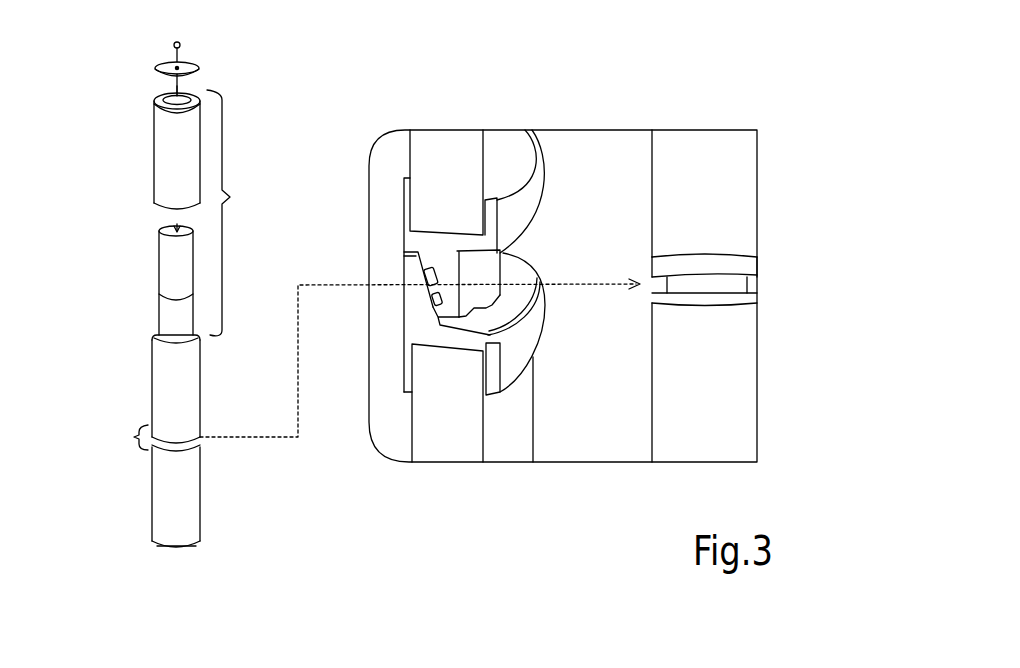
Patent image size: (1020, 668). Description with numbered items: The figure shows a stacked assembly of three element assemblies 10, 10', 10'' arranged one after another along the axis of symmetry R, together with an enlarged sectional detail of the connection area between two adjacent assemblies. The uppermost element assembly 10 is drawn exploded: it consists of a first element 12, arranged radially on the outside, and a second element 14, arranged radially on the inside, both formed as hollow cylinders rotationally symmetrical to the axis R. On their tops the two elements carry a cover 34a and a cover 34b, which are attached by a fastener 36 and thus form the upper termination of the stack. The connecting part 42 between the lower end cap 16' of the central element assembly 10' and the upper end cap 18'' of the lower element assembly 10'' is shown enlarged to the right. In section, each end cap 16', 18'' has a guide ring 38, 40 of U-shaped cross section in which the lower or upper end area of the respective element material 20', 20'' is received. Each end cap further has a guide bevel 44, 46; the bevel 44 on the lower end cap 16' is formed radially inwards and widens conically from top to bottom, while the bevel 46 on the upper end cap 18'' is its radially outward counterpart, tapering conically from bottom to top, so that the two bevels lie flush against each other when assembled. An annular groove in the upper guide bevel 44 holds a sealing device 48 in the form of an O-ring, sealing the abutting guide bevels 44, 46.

The element assembly 10 is at (232, 213).
The first element 12 is at (167, 157).
The second element 14 is at (172, 275).
The cover 34a is at (163, 63).
The cover 34b is at (173, 227).
The fastener 36 is at (182, 42).
The axis of symmetry R is at (177, 88).
The central element assembly 10' is at (517, 286).
The lower element assembly 10'' is at (511, 420).
The connecting part 42 is at (136, 436).
The element material 20' is at (404, 172).
The element material 20'' is at (415, 426).
The lower end cap 16' is at (587, 285).
The upper end cap 18'' is at (594, 328).
The guide ring 38 is at (493, 228).
The guide ring 40 is at (500, 343).
The guide bevel 44 is at (410, 252).
The guide bevel 46 is at (437, 312).
The sealing device 48 is at (423, 272).